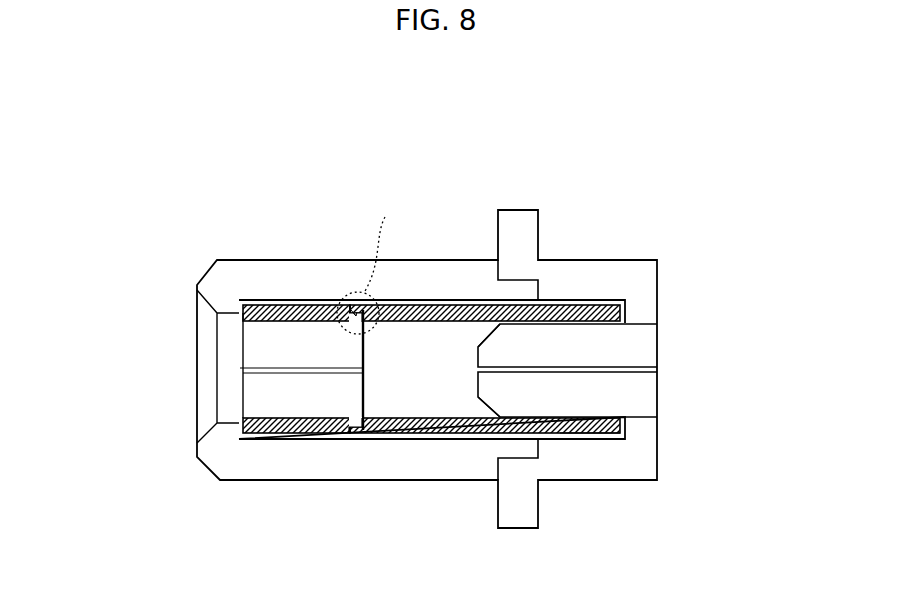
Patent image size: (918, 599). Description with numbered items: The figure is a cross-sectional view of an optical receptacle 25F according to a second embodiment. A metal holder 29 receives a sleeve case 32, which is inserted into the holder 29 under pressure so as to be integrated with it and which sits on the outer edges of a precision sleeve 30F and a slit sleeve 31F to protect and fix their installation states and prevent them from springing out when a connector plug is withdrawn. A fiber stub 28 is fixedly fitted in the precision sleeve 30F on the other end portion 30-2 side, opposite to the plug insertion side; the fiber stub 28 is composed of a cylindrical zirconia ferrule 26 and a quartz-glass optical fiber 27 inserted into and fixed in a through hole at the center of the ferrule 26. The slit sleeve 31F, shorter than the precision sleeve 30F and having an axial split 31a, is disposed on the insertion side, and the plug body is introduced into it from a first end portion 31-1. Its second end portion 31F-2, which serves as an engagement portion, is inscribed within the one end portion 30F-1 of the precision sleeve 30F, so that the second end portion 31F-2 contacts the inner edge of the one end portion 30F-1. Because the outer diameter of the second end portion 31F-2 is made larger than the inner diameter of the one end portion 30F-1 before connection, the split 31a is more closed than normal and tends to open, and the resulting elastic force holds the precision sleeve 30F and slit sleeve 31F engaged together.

The optical receptacle 25F is at (372, 172).
The ferrule 26 is at (627, 400).
The optical fiber 27 is at (627, 366).
The fiber stub 28 is at (476, 349).
The holder 29 is at (578, 278).
The precision sleeve 30F is at (602, 308).
The one end portion 30F-1 is at (357, 434).
The other end portion 30-2 is at (595, 434).
The slit sleeve 31F is at (300, 303).
The second end portion 31F-2 is at (355, 403).
The first end portion 31-1 is at (259, 408).
The split 31a is at (240, 368).
The sleeve case 32 is at (265, 462).